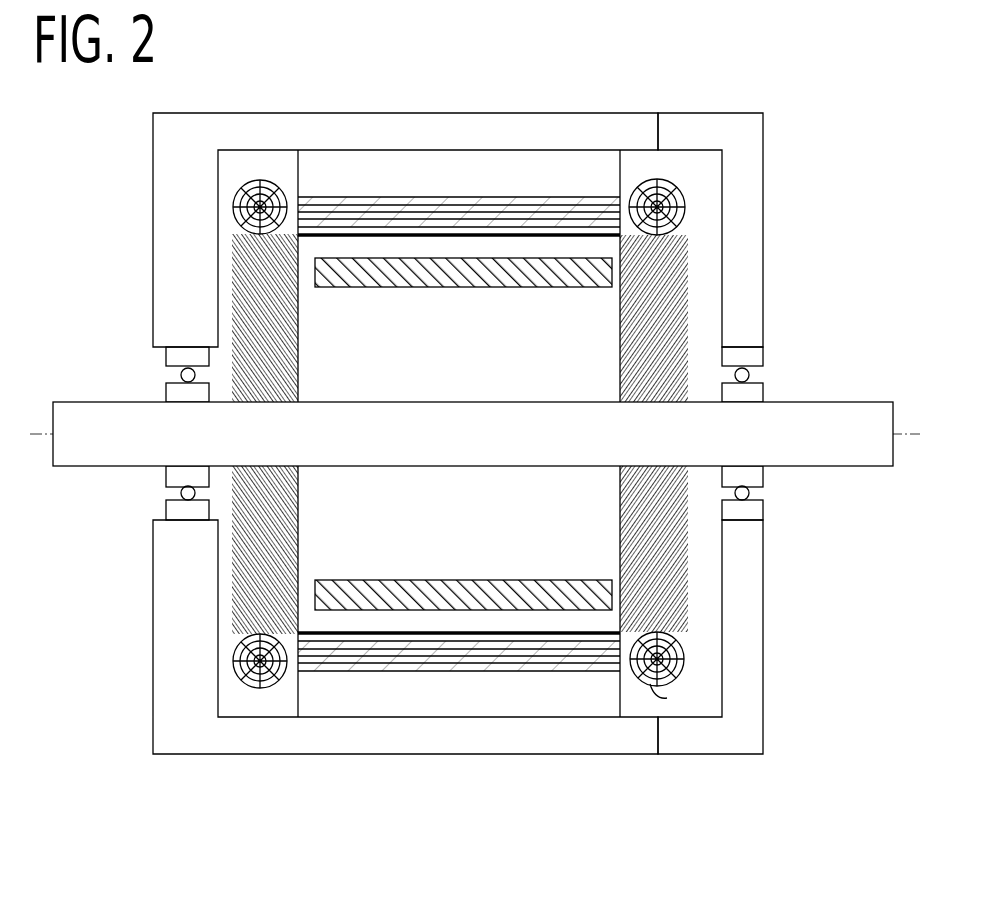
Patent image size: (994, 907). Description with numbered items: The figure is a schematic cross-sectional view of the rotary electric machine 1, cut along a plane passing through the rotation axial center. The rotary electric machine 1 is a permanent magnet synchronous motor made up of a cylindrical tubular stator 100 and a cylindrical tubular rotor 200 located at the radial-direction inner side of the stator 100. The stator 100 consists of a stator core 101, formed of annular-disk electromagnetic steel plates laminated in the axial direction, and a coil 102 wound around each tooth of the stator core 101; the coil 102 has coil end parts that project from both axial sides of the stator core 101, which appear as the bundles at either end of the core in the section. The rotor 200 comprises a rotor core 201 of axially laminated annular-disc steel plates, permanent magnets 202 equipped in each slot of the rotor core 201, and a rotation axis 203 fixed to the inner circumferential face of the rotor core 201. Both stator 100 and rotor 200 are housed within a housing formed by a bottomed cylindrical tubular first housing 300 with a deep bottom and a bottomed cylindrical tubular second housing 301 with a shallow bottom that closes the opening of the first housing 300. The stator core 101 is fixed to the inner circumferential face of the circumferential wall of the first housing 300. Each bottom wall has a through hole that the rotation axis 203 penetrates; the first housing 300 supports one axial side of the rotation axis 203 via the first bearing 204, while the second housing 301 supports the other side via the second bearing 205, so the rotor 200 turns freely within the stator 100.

The rotary electric machine 1 is at (668, 82).
The stator 100 is at (285, 63).
The stator core 101 is at (430, 177).
The coil 102 is at (262, 180).
The rotor 200 is at (522, 833).
The rotor core 201 is at (430, 557).
The permanent magnet 202 is at (483, 600).
The rotation axis 203 is at (390, 455).
The first bearing 204 is at (172, 507).
The second bearing 205 is at (758, 508).
The first housing 300 is at (208, 739).
The second housing 301 is at (706, 739).